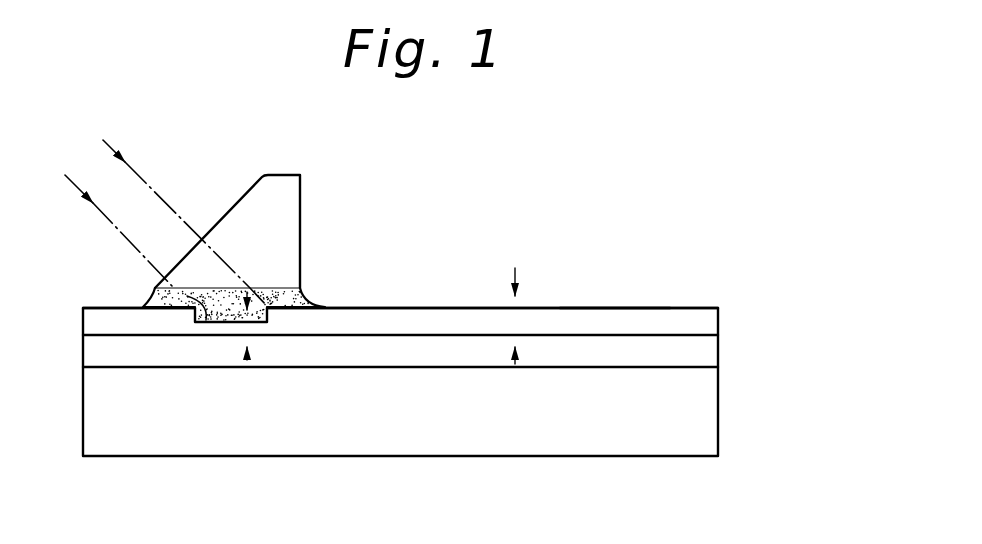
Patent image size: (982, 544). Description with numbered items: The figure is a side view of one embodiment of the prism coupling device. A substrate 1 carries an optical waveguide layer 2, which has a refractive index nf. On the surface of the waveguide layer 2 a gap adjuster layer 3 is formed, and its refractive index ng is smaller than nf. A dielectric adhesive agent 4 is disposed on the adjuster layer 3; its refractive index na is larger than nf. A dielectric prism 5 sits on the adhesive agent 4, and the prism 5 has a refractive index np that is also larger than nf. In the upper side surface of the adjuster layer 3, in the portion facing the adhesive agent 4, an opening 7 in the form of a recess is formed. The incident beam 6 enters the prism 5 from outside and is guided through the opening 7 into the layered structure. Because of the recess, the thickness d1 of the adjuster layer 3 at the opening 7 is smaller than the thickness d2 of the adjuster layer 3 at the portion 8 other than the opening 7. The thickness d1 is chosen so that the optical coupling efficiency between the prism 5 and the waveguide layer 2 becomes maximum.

The substrate 1 is at (600, 432).
The optical waveguide layer 2 is at (708, 352).
The gap adjuster layer 3 is at (708, 318).
The dielectric adhesive agent 4 is at (308, 290).
The dielectric prism 5 is at (283, 207).
The incident beam 6 is at (103, 140).
The opening 7 is at (160, 297).
The portion other than the opening 8 is at (617, 305).
The thickness of the layer at the opening d1 is at (246, 328).
The thickness of the layer outside the opening d2 is at (518, 318).